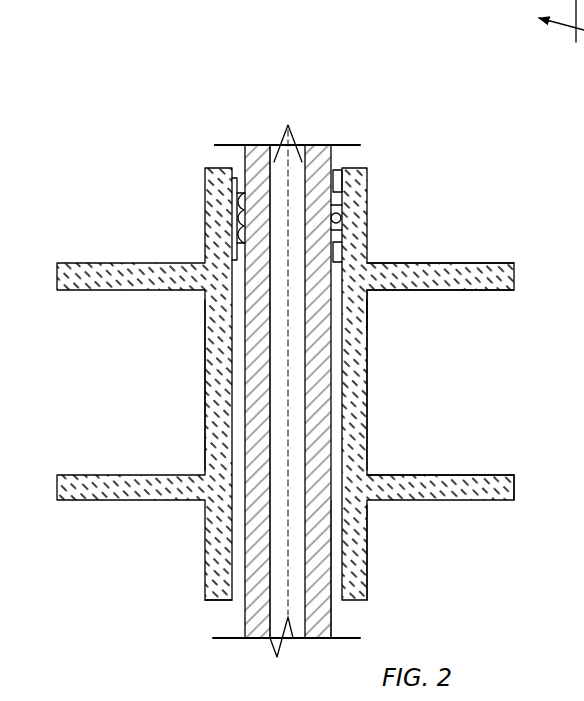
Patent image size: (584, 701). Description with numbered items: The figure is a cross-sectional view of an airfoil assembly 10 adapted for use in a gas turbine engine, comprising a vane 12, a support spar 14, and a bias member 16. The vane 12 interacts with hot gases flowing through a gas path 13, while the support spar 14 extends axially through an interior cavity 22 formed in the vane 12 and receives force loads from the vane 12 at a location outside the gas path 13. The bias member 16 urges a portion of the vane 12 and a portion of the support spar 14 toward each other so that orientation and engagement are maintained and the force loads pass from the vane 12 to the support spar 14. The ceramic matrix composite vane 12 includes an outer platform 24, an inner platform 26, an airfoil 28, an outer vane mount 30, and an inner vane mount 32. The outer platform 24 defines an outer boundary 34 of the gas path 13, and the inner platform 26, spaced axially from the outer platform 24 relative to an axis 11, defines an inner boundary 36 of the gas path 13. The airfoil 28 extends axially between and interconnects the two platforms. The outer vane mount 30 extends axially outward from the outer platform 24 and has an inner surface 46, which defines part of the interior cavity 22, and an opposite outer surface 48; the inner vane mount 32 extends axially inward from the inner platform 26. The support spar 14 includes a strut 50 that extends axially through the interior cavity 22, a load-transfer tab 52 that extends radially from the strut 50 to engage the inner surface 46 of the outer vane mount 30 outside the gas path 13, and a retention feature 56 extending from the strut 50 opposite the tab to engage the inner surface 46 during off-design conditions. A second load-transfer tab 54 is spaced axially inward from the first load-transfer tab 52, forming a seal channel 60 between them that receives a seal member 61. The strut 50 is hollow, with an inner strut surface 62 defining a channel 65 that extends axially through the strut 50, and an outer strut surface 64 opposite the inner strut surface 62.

The airfoil assembly 10 is at (162, 114).
The axis 11 is at (288, 581).
The vane 12 is at (516, 376).
The gas path 13 is at (447, 419).
The support spar 14 is at (250, 142).
The bias member 16 is at (204, 236).
The interior cavity 22 is at (236, 603).
The outer platform 24 is at (516, 280).
The inner platform 26 is at (516, 490).
The airfoil 28 is at (366, 388).
The outer vane mount 30 is at (376, 222).
The inner vane mount 32 is at (378, 550).
The outer boundary 34 is at (449, 291).
The inner boundary 36 is at (455, 475).
The inner surface 46 is at (338, 262).
The outer surface 48 is at (366, 300).
The strut 50 is at (228, 370).
The load-transfer tab 52 is at (335, 181).
The second load-transfer tab 54 is at (353, 214).
The retention feature 56 is at (237, 259).
The seal channel 60 is at (321, 191).
The seal member 61 is at (346, 204).
The inner strut surface 62 is at (297, 613).
The outer strut surface 64 is at (330, 618).
The channel 65 is at (275, 180).